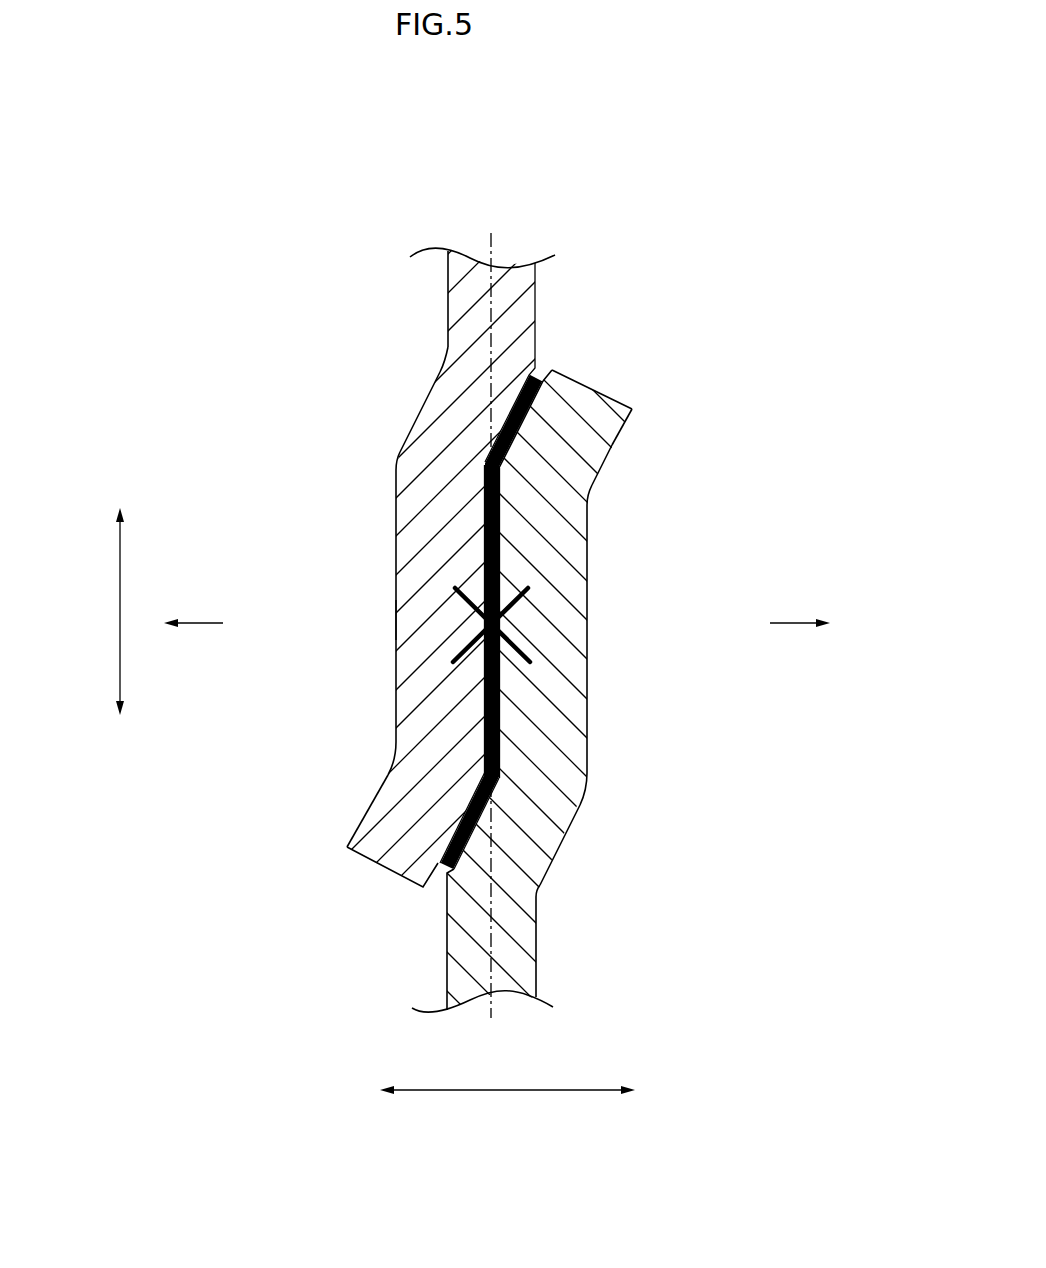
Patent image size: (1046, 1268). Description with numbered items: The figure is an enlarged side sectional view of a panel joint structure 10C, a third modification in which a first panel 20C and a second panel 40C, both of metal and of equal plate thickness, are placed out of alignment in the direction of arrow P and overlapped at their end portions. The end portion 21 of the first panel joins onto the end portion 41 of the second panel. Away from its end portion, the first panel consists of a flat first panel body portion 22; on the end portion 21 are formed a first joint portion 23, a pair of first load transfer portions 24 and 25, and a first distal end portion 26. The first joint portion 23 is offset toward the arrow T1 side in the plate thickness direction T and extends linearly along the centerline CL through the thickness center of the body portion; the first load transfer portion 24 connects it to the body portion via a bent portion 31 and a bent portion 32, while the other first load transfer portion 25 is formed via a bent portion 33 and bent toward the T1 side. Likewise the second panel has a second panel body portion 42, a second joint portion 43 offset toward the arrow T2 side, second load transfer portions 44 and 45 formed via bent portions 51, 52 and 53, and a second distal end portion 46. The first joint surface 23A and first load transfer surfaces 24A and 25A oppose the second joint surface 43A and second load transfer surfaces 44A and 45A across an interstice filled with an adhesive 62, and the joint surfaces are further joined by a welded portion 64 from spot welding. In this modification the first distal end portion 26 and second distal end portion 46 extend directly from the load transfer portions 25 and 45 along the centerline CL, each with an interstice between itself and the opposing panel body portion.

The panel joint structure 10C is at (523, 180).
The first panel 20C is at (548, 947).
The second panel 40C is at (438, 315).
The end portion of the first panel 21 is at (658, 615).
The first panel body portion 22 is at (538, 980).
The first joint portion 23 is at (500, 707).
The first load transfer portion 24 is at (492, 855).
The first load transfer portion 25 is at (610, 462).
The first distal end portion 26 is at (628, 420).
The bent portion 31 is at (538, 895).
The bent portion 32 is at (582, 803).
The bent portion 33 is at (588, 497).
The end portion of the second panel 41 is at (335, 655).
The second panel body portion 42 is at (447, 282).
The second joint portion 43 is at (395, 603).
The second load transfer portion 44 is at (430, 385).
The second load transfer portion 45 is at (373, 800).
The second distal end portion 46 is at (348, 837).
The bent portion 51 is at (447, 347).
The bent portion 52 is at (400, 452).
The bent portion 53 is at (393, 745).
The first joint surface 23A is at (483, 560).
The first load transfer surface 24A is at (470, 790).
The first load transfer surface 25A is at (503, 405).
The second joint surface 43A is at (587, 707).
The second load transfer surface 44A is at (613, 433).
The second load transfer surface 45A is at (540, 862).
The adhesive 62 is at (500, 543).
The welded portion 64 is at (530, 650).
The centerline CL is at (491, 990).
The direction parallel to the panels P is at (118, 580).
The plate thickness direction T is at (513, 1092).
The one side in the plate thickness direction T1 is at (808, 622).
The other side in the plate thickness direction T2 is at (205, 622).